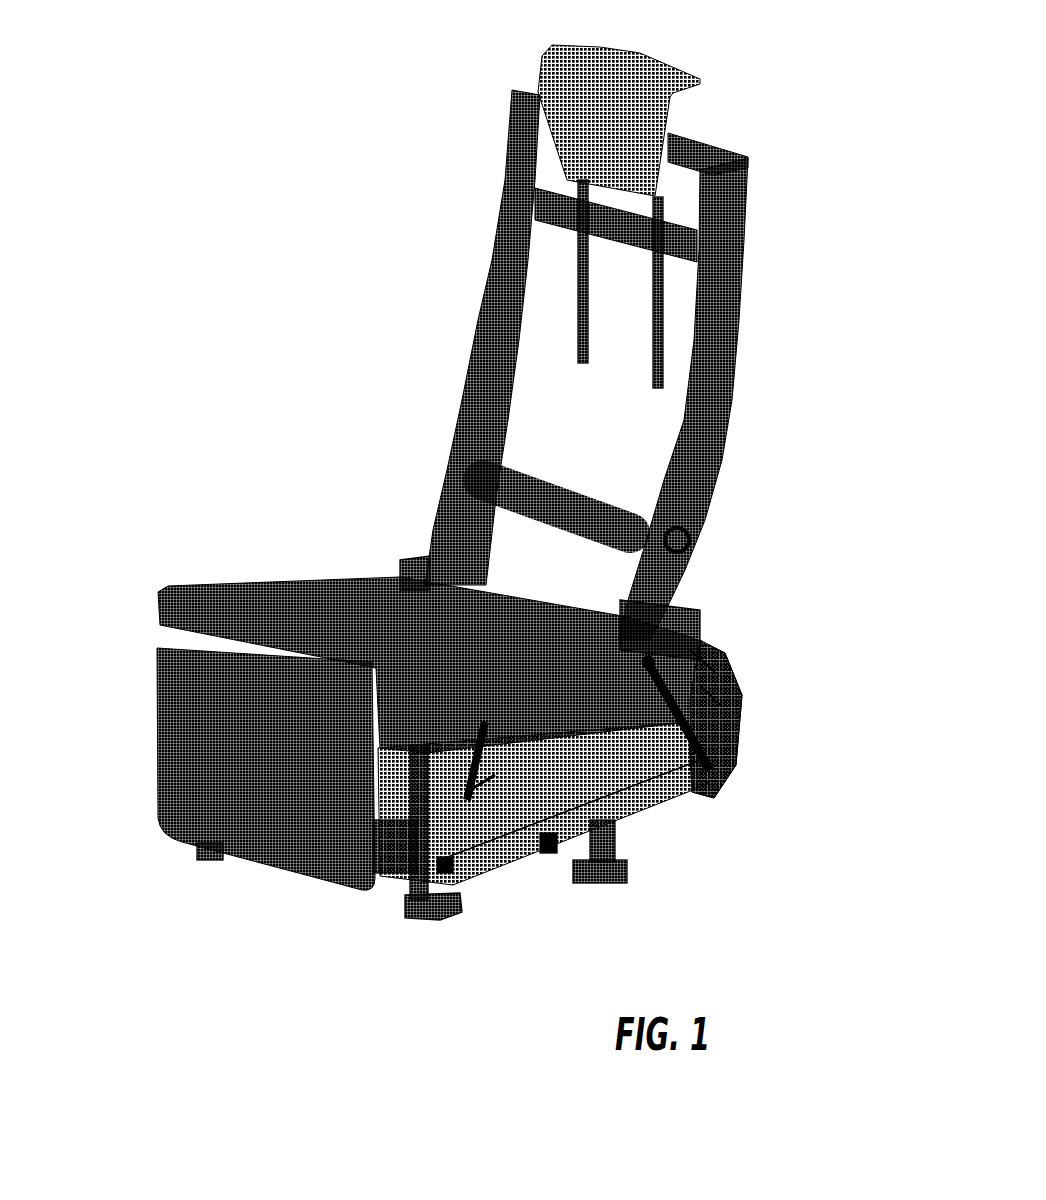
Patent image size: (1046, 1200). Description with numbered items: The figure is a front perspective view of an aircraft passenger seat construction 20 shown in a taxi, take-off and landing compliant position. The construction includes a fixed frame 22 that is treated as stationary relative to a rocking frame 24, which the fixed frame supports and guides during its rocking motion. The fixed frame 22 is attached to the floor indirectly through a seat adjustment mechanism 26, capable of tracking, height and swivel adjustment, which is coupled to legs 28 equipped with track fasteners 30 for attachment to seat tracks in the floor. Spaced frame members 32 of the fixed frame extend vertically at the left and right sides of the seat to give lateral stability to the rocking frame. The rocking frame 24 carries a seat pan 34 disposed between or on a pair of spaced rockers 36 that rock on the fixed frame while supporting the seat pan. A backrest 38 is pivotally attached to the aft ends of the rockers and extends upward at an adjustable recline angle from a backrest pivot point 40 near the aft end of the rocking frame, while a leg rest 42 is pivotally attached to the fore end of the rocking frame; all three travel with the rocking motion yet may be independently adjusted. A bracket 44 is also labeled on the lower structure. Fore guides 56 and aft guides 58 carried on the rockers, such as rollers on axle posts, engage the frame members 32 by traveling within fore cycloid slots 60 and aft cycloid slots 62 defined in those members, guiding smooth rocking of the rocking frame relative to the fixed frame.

The aircraft passenger seat construction 20 is at (763, 76).
The fixed frame 22 is at (760, 722).
The rocking frame 24 is at (696, 611).
The seat adjustment mechanism 26 is at (656, 829).
The legs 28 is at (523, 847).
The track fasteners 30 is at (430, 915).
The frame members 32 is at (718, 730).
The seat pan 34 is at (341, 581).
The rockers 36 is at (405, 549).
The backrest 38 is at (466, 289).
The backrest pivot point 40 is at (657, 622).
The leg rest 42 is at (138, 721).
The mounting bracket 44 is at (406, 841).
The fore guides 56 is at (463, 803).
The aft guides 58 is at (703, 663).
The fore cycloid slots 60 is at (480, 782).
The aft cycloid slots 62 is at (710, 695).